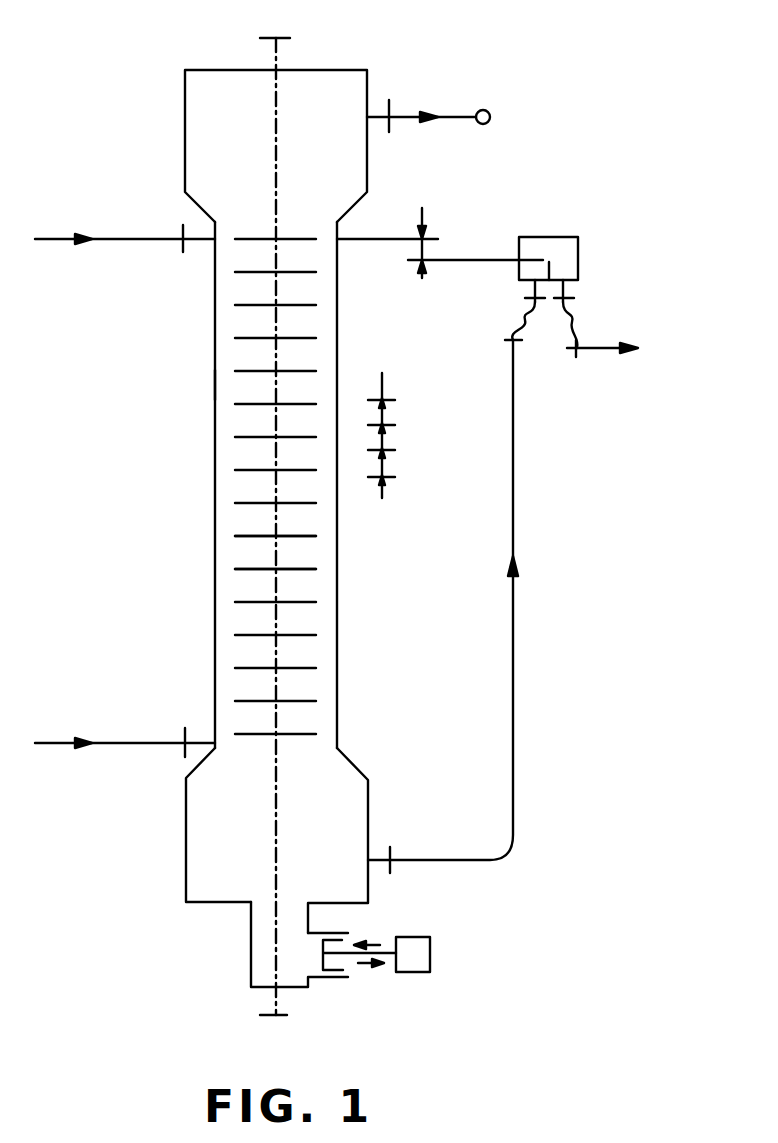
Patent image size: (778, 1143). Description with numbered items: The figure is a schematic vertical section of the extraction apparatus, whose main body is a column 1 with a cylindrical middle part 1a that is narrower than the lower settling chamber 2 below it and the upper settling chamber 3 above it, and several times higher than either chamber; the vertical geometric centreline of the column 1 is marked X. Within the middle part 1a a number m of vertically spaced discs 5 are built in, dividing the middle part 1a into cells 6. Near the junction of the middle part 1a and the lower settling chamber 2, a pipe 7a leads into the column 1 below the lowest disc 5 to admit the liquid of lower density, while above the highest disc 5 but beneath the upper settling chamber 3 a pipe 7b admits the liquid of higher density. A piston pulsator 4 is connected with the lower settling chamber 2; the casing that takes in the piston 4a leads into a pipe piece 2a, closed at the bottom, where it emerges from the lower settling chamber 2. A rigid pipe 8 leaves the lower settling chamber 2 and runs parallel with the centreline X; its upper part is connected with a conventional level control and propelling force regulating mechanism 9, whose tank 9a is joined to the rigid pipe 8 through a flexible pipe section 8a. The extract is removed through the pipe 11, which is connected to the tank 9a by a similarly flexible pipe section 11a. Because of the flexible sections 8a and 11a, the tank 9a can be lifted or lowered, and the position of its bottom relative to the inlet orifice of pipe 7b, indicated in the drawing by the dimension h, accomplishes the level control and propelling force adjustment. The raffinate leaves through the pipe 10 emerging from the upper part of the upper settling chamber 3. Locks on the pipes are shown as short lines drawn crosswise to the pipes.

The vertical geometric centreline X is at (278, 64).
The column 1 is at (203, 304).
The middle part 1a is at (215, 385).
The lower settling chamber 2 is at (186, 873).
The pipe piece 2a is at (258, 960).
The upper settling chamber 3 is at (185, 154).
The piston pulsator 4 is at (428, 950).
The piston 4a is at (335, 970).
The discs 5 is at (247, 570).
The cells 6 is at (250, 458).
The pipe 7a is at (208, 738).
The pipe 7b is at (205, 238).
The pipe 8 is at (513, 747).
The flexible pipe section 8a is at (535, 318).
The level control and propelling force regulating mechanism 9 is at (582, 270).
The tank 9a is at (535, 237).
The pipe 10 is at (374, 112).
The pipe 11 is at (600, 350).
The flexible pipe section 11a is at (563, 330).
The height dimension h is at (425, 255).
The number of discs m is at (383, 440).